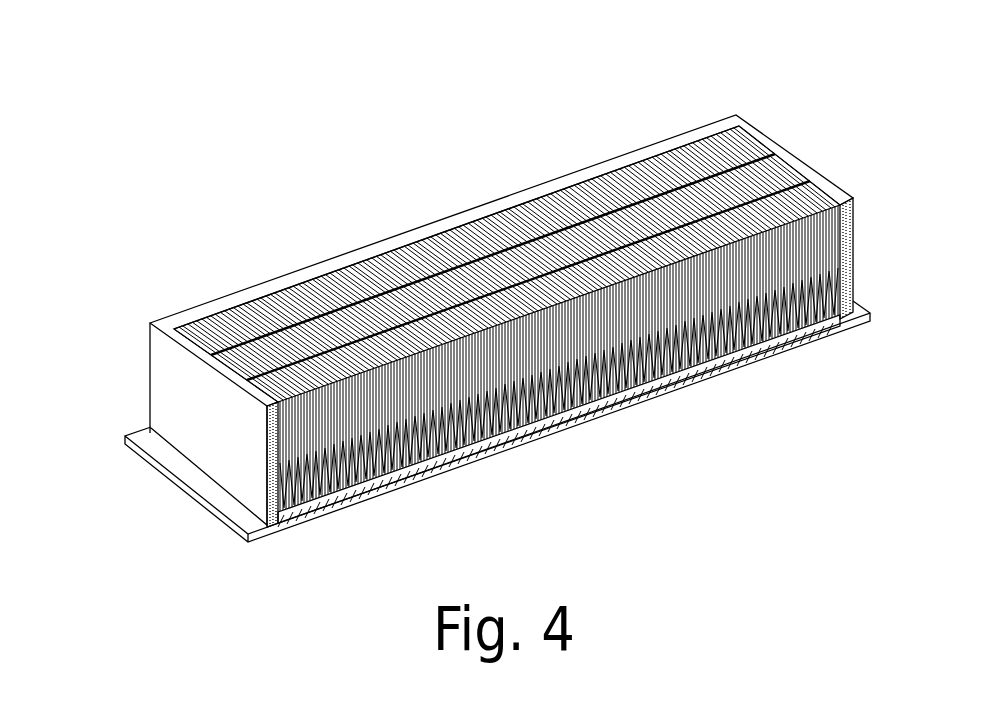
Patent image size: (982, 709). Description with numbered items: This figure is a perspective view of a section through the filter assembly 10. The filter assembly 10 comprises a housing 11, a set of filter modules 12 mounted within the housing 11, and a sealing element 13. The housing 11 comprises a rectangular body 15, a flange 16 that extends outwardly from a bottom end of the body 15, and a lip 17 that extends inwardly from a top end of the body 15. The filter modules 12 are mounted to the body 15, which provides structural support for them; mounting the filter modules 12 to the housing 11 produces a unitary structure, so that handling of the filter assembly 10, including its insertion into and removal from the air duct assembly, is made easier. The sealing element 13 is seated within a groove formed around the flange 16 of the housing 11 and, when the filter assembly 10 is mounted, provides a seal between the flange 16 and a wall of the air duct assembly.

The filter assembly 10 is at (374, 182).
The housing 11 is at (657, 134).
The filter modules 12 is at (586, 188).
The sealing element 13 is at (259, 527).
The body 15 is at (160, 381).
The flange 16 is at (182, 481).
The lip 17 is at (834, 196).